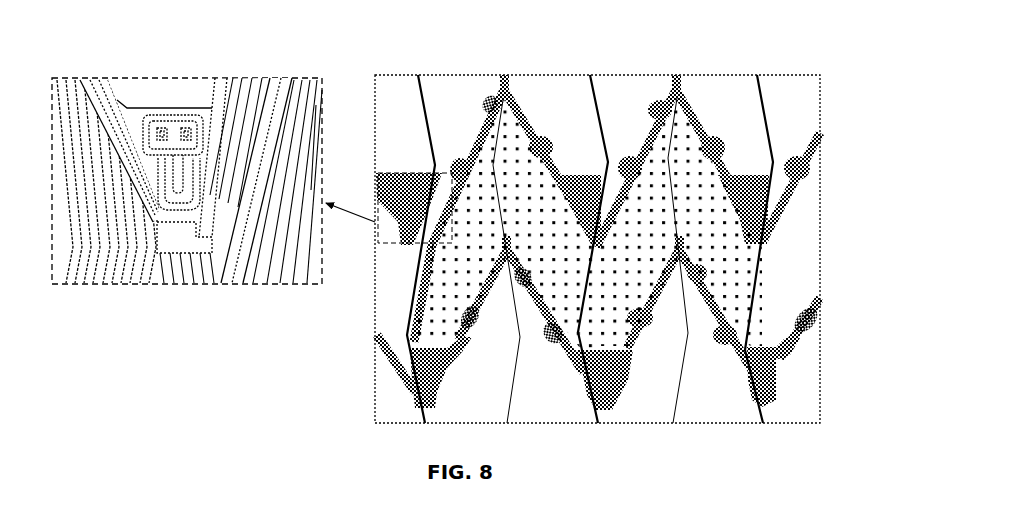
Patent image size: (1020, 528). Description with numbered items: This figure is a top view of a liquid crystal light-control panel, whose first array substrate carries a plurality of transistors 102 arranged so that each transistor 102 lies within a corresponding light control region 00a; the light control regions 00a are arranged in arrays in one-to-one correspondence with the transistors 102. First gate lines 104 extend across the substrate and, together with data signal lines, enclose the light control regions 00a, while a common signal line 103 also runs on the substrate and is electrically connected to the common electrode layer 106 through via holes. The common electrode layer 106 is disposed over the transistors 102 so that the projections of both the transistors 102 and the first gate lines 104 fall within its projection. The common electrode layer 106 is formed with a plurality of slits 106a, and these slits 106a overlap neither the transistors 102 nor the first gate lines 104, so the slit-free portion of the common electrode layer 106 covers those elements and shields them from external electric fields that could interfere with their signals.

The transistor 102 is at (172, 133).
The common signal line 103 is at (223, 88).
The first gate line 104 is at (290, 90).
The common electrode layer 106 is at (323, 77).
The slit 106a is at (62, 92).
The light control region 00a is at (735, 223).